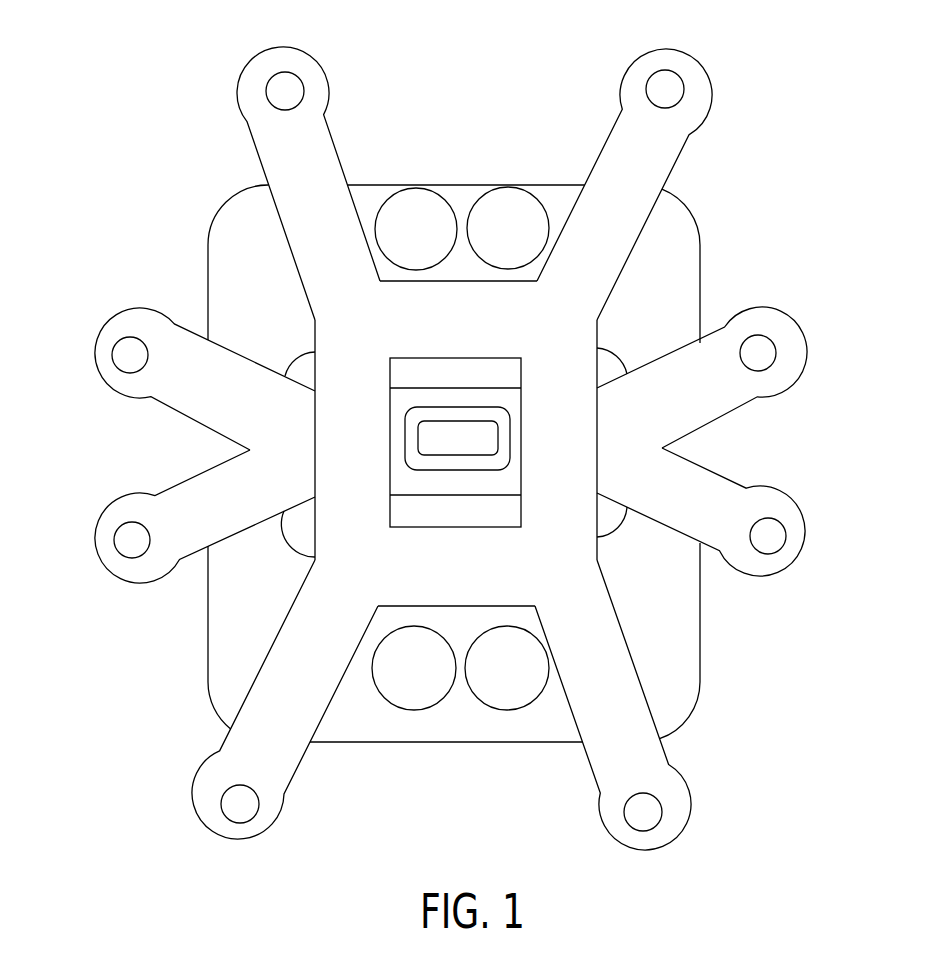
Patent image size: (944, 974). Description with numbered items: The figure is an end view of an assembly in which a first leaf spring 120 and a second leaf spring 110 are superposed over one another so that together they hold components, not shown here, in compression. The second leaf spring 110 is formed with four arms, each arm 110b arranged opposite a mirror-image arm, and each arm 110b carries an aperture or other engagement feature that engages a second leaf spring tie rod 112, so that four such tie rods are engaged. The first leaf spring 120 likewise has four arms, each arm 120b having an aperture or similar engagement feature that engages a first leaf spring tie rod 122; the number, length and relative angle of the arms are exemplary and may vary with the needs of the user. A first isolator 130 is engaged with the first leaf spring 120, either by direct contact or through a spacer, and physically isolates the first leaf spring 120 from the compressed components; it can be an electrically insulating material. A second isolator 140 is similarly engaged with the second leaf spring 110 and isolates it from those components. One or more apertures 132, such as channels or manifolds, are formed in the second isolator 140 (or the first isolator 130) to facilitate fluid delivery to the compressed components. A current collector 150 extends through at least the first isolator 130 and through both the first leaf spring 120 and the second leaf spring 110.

The second leaf spring 110 is at (432, 448).
The arm of second leaf spring 110b is at (280, 165).
The second leaf spring tie rod 112 is at (292, 83).
The first leaf spring 120 is at (451, 473).
The arm of first leaf spring 120b is at (193, 527).
The first leaf spring tie rod 122 is at (122, 355).
The first isolator 130 is at (602, 363).
The apertures 132 is at (417, 205).
The second isolator 140 is at (678, 692).
The current collector 150 is at (433, 443).